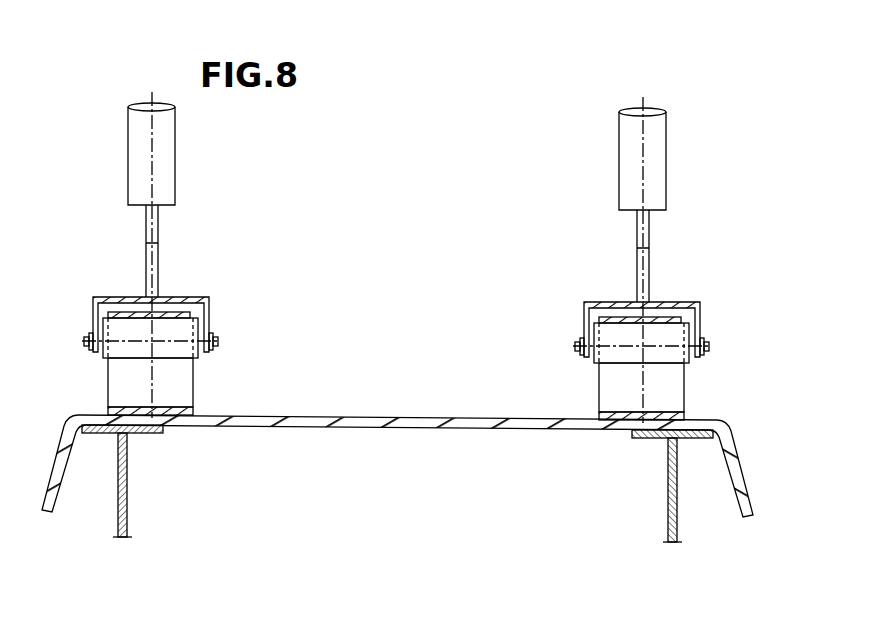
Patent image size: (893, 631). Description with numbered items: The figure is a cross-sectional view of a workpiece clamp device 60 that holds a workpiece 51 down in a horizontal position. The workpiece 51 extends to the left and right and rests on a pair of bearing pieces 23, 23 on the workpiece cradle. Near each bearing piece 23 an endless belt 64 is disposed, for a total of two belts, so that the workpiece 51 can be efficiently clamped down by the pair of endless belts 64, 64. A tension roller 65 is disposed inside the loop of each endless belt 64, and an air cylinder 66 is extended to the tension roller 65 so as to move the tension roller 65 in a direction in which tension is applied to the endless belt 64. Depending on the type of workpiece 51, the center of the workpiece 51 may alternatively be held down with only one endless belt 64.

The workpiece clamp device 60 is at (428, 75).
The air cylinder 66 is at (138, 143).
The tension roller 65 is at (98, 356).
The endless belt 64 is at (193, 410).
The workpiece 51 is at (378, 417).
The bearing piece 23 is at (126, 497).